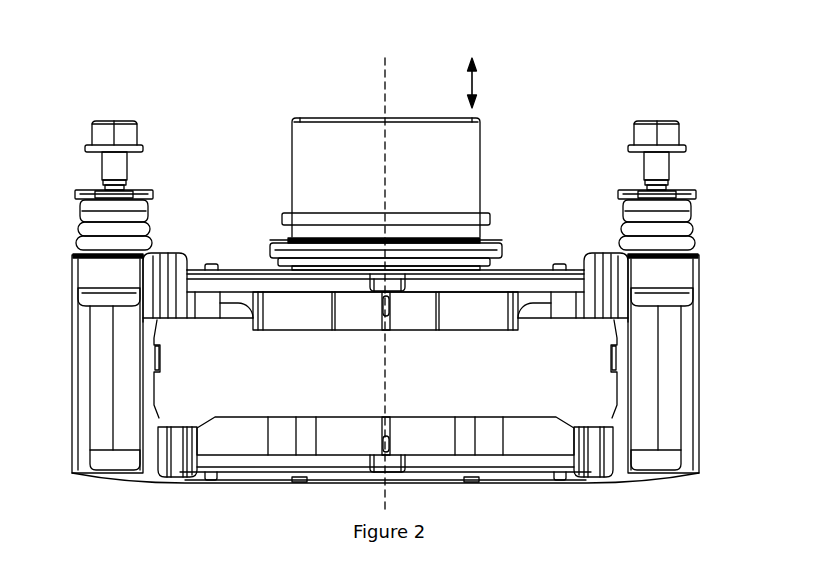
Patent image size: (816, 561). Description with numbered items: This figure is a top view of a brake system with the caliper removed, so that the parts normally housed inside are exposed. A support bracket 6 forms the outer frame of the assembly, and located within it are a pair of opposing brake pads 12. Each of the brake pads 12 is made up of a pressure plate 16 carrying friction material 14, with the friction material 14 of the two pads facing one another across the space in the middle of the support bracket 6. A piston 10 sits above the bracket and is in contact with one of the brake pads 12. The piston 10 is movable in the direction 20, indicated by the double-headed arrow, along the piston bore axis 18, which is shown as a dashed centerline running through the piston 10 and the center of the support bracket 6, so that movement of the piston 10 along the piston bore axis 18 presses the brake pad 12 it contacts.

The support bracket 6 is at (683, 275).
The piston 10 is at (292, 182).
The brake pads 12 is at (525, 320).
The friction material 14 is at (250, 317).
The pressure plate 16 is at (212, 282).
The piston bore axis 18 is at (382, 83).
The direction 20 is at (472, 83).